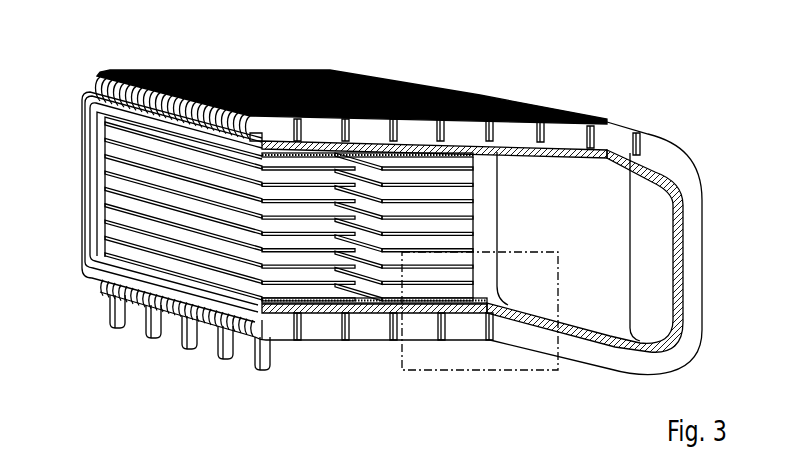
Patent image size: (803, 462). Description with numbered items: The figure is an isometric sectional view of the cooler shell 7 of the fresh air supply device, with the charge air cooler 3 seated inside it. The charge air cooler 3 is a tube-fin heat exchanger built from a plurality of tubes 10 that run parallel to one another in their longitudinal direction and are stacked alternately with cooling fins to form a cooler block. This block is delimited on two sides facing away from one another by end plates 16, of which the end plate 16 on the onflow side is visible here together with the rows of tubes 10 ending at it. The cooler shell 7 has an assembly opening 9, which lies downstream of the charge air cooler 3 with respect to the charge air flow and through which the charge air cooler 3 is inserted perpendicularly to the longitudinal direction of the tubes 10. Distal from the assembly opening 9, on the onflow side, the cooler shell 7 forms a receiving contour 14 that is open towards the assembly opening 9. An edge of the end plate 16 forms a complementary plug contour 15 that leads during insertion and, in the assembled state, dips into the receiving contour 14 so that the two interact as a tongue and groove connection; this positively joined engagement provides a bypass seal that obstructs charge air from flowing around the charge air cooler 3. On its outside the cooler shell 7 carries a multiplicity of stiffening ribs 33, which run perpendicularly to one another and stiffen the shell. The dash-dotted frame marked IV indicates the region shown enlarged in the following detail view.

The charge air cooler 3 is at (489, 193).
The cooler shell 7 is at (695, 243).
The assembly opening 9 is at (97, 228).
The tubes 10 is at (472, 214).
The receiving contour 14 is at (496, 170).
The plug contour 15 is at (486, 125).
The end plate 16 is at (366, 140).
The stiffening ribs 33 is at (280, 72).
The section IV detail region IV is at (558, 268).